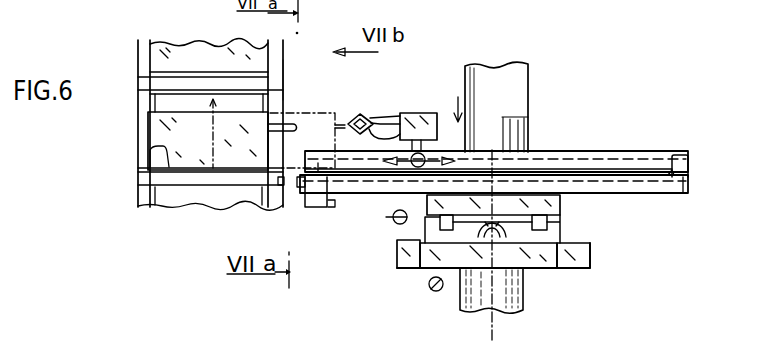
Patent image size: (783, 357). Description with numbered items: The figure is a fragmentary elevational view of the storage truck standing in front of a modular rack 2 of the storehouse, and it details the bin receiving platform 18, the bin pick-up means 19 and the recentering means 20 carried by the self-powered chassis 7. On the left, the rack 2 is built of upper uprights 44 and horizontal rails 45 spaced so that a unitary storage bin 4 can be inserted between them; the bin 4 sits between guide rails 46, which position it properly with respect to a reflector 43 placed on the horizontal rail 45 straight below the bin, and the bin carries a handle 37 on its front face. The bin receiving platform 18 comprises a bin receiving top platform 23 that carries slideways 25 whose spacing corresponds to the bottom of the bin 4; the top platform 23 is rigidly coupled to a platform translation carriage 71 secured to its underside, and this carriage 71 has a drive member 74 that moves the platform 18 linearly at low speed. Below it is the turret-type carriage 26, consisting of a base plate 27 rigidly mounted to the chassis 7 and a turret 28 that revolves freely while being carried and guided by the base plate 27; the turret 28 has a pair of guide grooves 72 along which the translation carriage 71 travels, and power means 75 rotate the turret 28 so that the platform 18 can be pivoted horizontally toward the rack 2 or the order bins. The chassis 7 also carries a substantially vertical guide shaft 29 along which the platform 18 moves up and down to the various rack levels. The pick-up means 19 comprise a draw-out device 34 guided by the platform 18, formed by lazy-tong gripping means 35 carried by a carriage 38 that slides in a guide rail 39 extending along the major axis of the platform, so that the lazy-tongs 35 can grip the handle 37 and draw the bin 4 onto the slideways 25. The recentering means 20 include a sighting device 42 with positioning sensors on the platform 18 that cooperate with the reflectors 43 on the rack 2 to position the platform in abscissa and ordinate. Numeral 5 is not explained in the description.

The modular rack 2 is at (186, 38).
The unitary storage bin 4 is at (208, 117).
The spindle axis 5 is at (458, 95).
The self-powered chassis 7 is at (514, 92).
The bin receiving platform 18 is at (634, 144).
The bin pick-up means 19 is at (443, 128).
The recentering means 20 is at (335, 207).
The bin receiving top platform 23 is at (688, 190).
The slideway 25 is at (671, 175).
The turret-type carriage 26 is at (596, 258).
The base plate 27 is at (535, 262).
The turret 28 is at (598, 243).
The guide shaft 29 is at (503, 117).
The draw-out device 34 is at (400, 118).
The lazy-tong gripping means 35 is at (359, 115).
The handle 37 is at (297, 127).
The carriage 38 is at (412, 112).
The guide rail 39 is at (595, 166).
The sighting device 42 is at (313, 203).
The reflector 43 is at (293, 78).
The upper upright 44 is at (137, 97).
The horizontal rail 45 is at (240, 86).
The guide rail 46 is at (158, 160).
The platform translation carriage 71 is at (560, 206).
The guide groove 72 is at (556, 260).
The drive member 74 is at (401, 214).
The power means 75 is at (443, 291).